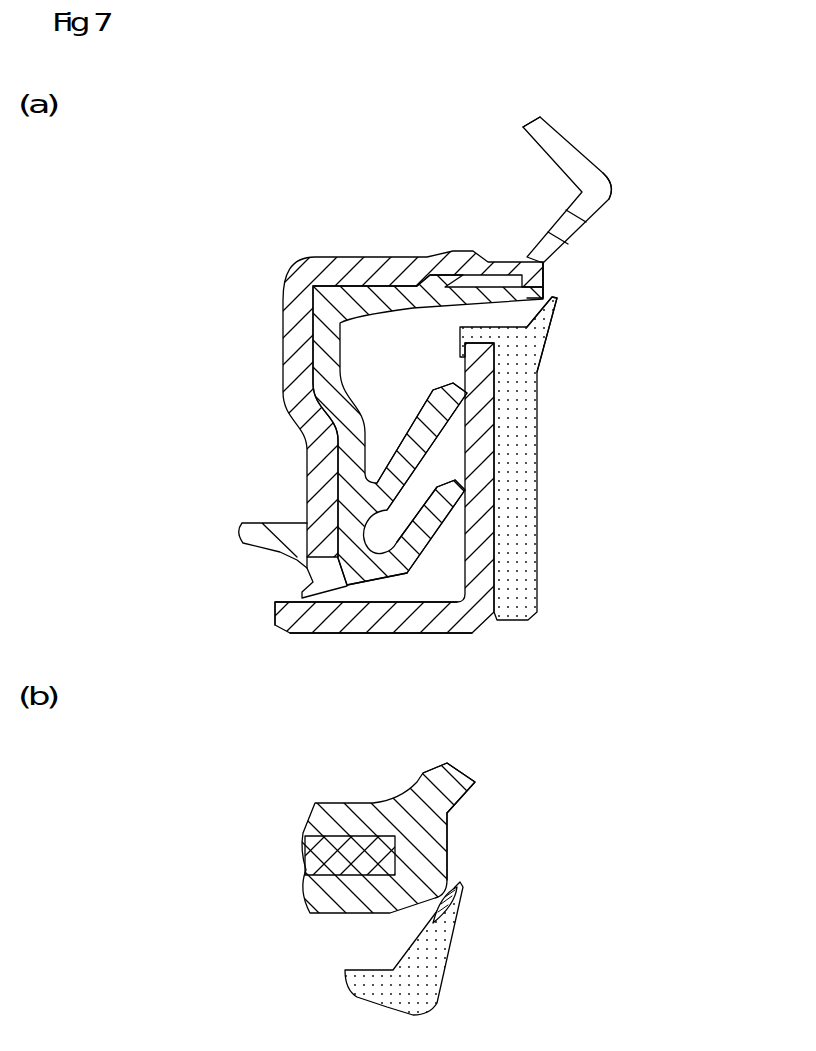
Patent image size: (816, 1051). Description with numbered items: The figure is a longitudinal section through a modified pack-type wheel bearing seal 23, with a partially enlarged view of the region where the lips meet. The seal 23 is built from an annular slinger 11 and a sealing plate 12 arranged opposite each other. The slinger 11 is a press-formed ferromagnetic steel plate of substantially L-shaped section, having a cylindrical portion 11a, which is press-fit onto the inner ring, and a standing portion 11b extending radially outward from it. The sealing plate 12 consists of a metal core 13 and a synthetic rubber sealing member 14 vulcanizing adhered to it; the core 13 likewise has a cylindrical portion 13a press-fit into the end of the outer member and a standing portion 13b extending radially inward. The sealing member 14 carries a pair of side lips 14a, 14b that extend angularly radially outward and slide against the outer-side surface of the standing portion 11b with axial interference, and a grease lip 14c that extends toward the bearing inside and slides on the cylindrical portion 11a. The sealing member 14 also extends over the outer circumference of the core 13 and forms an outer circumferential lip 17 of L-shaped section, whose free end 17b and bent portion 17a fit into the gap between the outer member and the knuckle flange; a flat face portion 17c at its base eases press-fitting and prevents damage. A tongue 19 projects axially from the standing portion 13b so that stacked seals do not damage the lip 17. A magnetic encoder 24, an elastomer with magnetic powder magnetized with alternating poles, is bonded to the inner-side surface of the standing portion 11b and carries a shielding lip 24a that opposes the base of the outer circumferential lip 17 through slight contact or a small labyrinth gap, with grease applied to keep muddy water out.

The slinger 11 is at (612, 545).
The cylindrical portion 11a is at (420, 603).
The standing portion 11b is at (480, 525).
The sealing plate 12 is at (100, 350).
The metal core 13 is at (155, 327).
The cylindrical portion 13a is at (350, 287).
The standing portion 13b is at (300, 358).
The sealing member 14 is at (157, 422).
The side lip 14a is at (443, 410).
The side lip 14b is at (448, 498).
The grease lip 14c is at (303, 558).
The outer circumferential lip 17 is at (594, 184).
The bent portion of arm 17a is at (612, 190).
The free end of arm 17b is at (532, 130).
The flat face portion 17c is at (545, 283).
The tongue 19 is at (267, 540).
The seal 23 is at (247, 261).
The magnetic encoder 24 is at (520, 427).
The shielding lip 24a is at (558, 322).